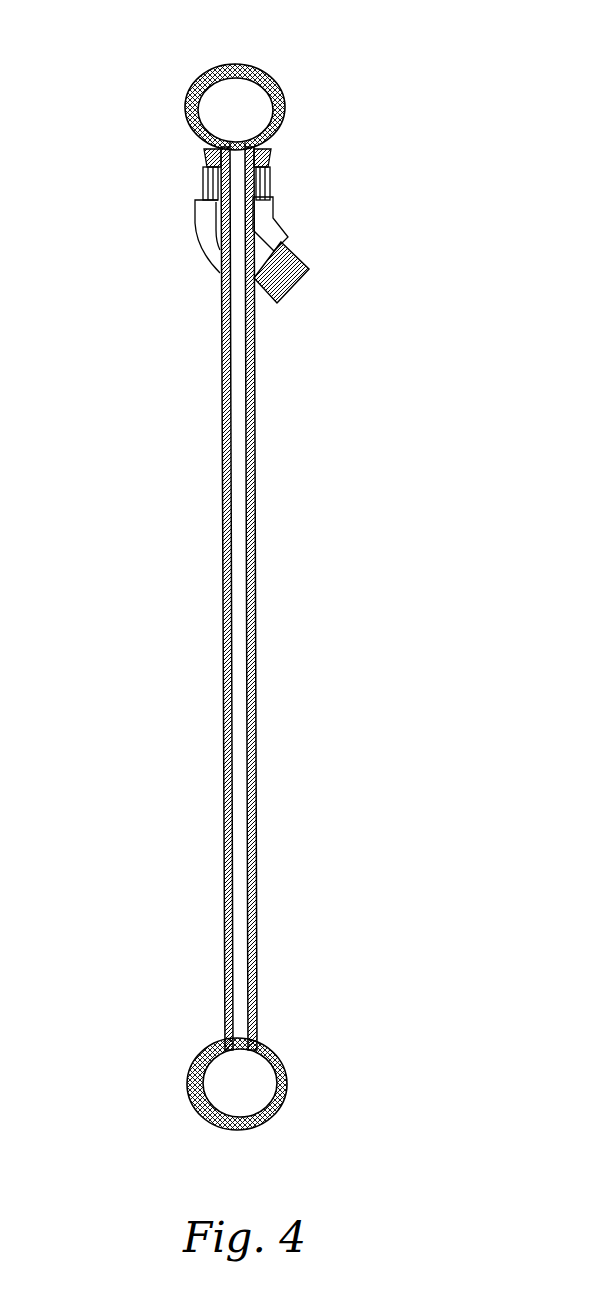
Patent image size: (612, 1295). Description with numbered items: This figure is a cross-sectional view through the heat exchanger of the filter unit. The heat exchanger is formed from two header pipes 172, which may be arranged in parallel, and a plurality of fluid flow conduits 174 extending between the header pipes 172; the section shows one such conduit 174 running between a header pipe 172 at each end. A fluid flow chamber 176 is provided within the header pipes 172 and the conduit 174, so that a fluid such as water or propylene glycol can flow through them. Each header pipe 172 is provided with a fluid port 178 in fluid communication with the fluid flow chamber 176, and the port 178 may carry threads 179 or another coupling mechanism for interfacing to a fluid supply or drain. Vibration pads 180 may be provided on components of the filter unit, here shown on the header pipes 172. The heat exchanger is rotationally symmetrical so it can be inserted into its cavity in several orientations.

The header pipe 172 is at (286, 121).
The fluid flow conduit 174 is at (224, 561).
The fluid flow chamber 176 is at (245, 108).
The fluid port 178 is at (278, 220).
The threads 179 is at (303, 258).
The vibration pad 180 is at (186, 98).